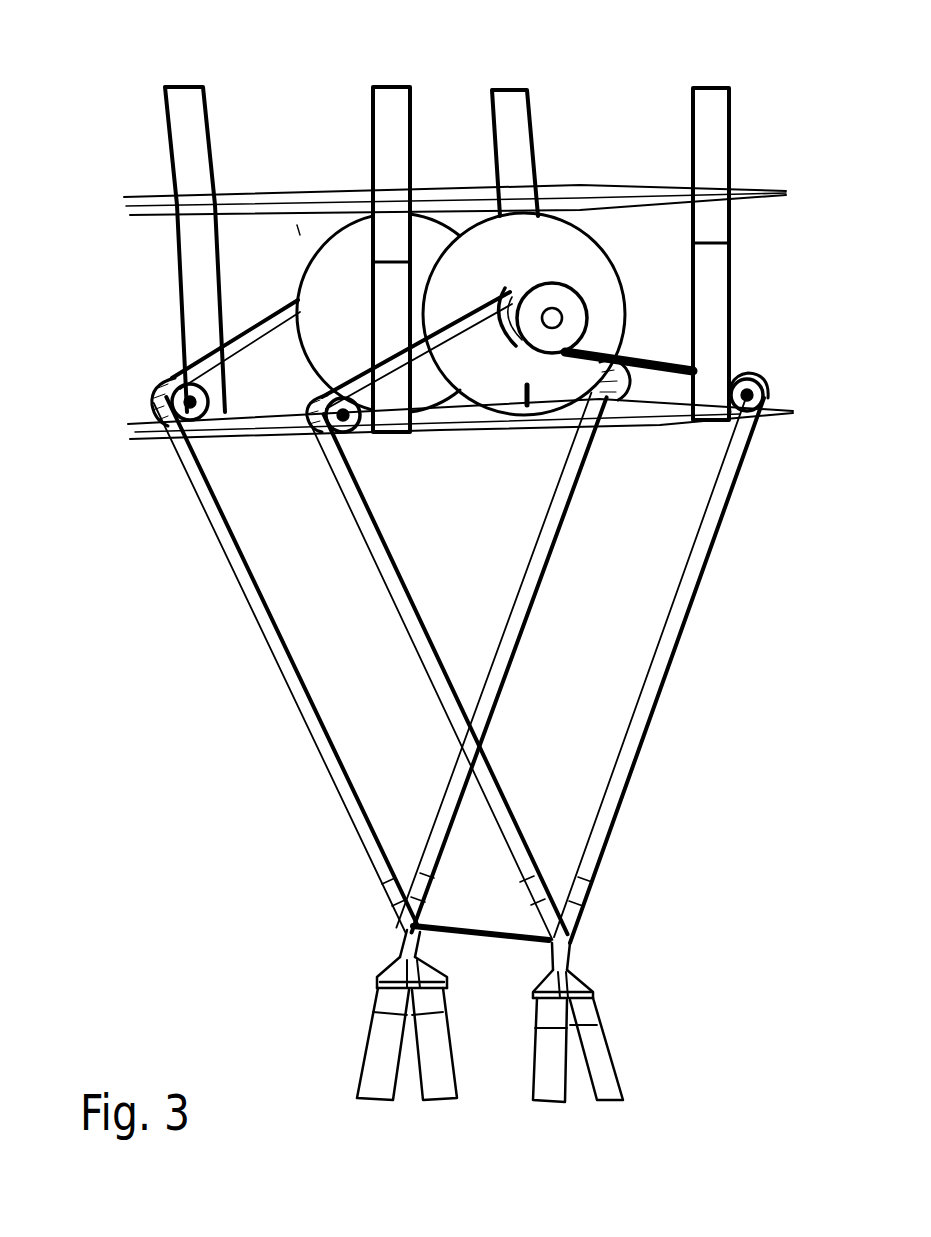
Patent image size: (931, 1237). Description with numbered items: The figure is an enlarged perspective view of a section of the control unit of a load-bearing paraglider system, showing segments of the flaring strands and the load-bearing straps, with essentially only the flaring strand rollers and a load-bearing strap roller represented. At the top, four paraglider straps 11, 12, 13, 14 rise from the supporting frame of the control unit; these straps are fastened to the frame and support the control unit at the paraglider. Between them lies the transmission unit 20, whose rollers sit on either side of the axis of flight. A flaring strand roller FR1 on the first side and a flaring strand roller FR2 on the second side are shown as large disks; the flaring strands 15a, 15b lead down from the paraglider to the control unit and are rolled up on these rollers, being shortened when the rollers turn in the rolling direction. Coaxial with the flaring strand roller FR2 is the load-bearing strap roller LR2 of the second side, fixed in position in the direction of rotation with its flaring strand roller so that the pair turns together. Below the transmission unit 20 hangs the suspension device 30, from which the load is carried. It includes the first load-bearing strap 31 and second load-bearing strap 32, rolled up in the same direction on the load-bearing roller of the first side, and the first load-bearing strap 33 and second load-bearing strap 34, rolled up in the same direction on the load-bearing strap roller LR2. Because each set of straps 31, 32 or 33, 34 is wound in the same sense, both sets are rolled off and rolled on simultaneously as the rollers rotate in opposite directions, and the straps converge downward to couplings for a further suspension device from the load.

The paraglider strap 11 is at (204, 100).
The paraglider strap 12 is at (410, 103).
The paraglider strap 13 is at (527, 110).
The paraglider strap 14 is at (729, 110).
The flaring strand 15a is at (298, 230).
The flaring strand 15b is at (430, 200).
The transmission unit 20 is at (621, 246).
The flaring strand roller FR1 is at (327, 291).
The flaring strand roller FR2 is at (607, 309).
The load-bearing strap roller LR2 is at (572, 330).
The suspension device 30 is at (232, 691).
The first load-bearing strap 31 is at (567, 513).
The second load-bearing strap 32 is at (230, 560).
The first load-bearing strap 33 is at (707, 550).
The second load-bearing strap 34 is at (373, 543).